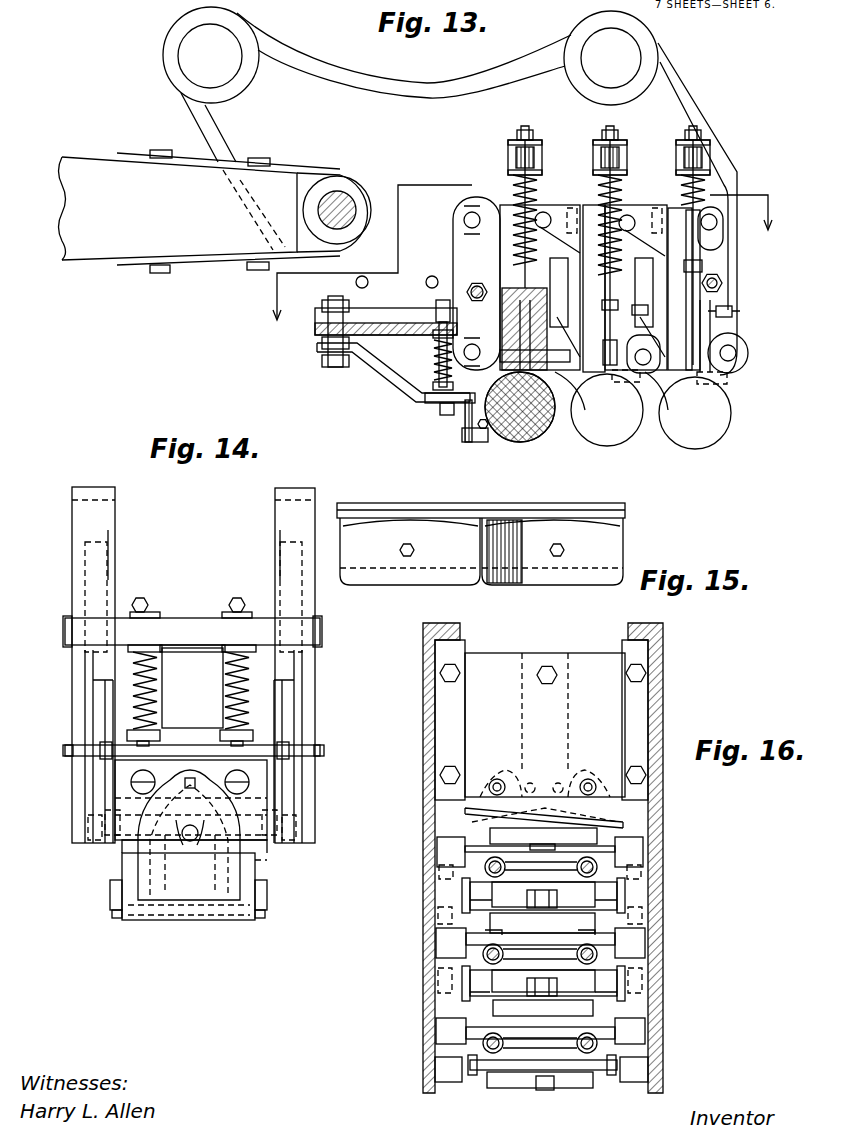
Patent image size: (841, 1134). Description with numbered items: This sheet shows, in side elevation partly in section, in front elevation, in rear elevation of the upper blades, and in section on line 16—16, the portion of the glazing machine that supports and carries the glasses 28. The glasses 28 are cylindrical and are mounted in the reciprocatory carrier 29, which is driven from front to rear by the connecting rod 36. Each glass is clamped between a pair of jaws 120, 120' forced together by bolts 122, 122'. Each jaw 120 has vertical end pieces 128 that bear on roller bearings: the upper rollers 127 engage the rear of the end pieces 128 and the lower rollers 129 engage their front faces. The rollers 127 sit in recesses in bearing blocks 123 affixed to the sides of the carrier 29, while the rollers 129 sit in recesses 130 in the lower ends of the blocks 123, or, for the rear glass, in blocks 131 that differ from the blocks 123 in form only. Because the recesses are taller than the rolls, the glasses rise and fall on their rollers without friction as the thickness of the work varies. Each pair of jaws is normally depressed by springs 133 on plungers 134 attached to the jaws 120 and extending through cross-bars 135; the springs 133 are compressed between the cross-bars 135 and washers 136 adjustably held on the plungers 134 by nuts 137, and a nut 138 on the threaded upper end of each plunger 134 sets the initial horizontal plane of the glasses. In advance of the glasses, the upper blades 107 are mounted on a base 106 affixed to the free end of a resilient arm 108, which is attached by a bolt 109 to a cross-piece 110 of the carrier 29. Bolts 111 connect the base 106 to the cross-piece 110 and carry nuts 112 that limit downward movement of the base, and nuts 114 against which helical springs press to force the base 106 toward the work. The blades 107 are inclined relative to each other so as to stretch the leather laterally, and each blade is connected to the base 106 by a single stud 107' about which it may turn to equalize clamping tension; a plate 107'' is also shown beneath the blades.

In FIG. 13, the section line 16 is at (513, 262).
In FIG. 13, the glasses 28 is at (521, 432).
In FIG. 14, the glasses 28 is at (160, 922).
In FIG. 16, the glasses 28 is at (632, 872).
In FIG. 13, the carrier 29 is at (450, 191).
In FIG. 14, the carrier 29 is at (300, 715).
In FIG. 16, the carrier 29 is at (640, 1027).
In FIG. 13, the connecting rod 36 is at (215, 211).
In FIG. 13, the base 106 is at (485, 430).
In FIG. 14, the base 106 is at (262, 897).
In FIG. 15, the base 106 is at (627, 511).
In FIG. 16, the base 106 is at (606, 805).
In FIG. 13, the blades 107 is at (460, 440).
In FIG. 14, the blades 107 is at (206, 928).
In FIG. 15, the blades 107 is at (481, 564).
In FIG. 13, the stud 107' is at (449, 421).
In FIG. 15, the stud 107' is at (487, 547).
In FIG. 16, the plate 107'' is at (543, 844).
In FIG. 13, the resilient arm 108 is at (388, 372).
In FIG. 16, the resilient arm 108 is at (565, 707).
In FIG. 13, the bolt 109 is at (336, 368).
In FIG. 16, the bolt 109 is at (548, 668).
In FIG. 13, the cross-piece 110 is at (380, 318).
In FIG. 14, the cross-piece 110 is at (305, 790).
In FIG. 16, the cross-piece 110 is at (496, 662).
In FIG. 13, the bolts 111 is at (437, 353).
In FIG. 16, the bolts 111 is at (497, 778).
In FIG. 13, the nuts 112 is at (428, 286).
In FIG. 16, the nuts 112 is at (516, 782).
In FIG. 13, the nuts 114 is at (428, 400).
In FIG. 13, the jaw 120 is at (599, 335).
In FIG. 14, the jaw 120 is at (219, 864).
In FIG. 16, the jaw 120 is at (542, 923).
In FIG. 13, the jaw 120' is at (605, 418).
In FIG. 14, the jaw 120' is at (236, 902).
In FIG. 16, the jaw 120' is at (500, 1006).
In FIG. 13, the bolt 122 is at (686, 382).
In FIG. 14, the bolt 122 is at (189, 835).
In FIG. 16, the bolt 122 is at (543, 1039).
In FIG. 13, the bolt 122' is at (721, 305).
In FIG. 14, the bolt 122' is at (131, 854).
In FIG. 16, the bolt 122' is at (542, 1084).
In FIG. 13, the bearing blocks 123 is at (540, 197).
In FIG. 16, the bearing blocks 123 is at (640, 898).
In FIG. 13, the rollers 127 is at (558, 218).
In FIG. 16, the rollers 127 is at (640, 928).
In FIG. 13, the end pieces 128 is at (503, 240).
In FIG. 14, the end pieces 128 is at (105, 784).
In FIG. 16, the end pieces 128 is at (445, 950).
In FIG. 13, the rollers 129 is at (630, 374).
In FIG. 14, the rollers 129 is at (96, 842).
In FIG. 16, the rollers 129 is at (648, 965).
In FIG. 13, the recesses 130 is at (465, 232).
In FIG. 13, the blocks 131 is at (738, 304).
In FIG. 14, the blocks 131 is at (95, 727).
In FIG. 16, the blocks 131 is at (445, 806).
In FIG. 13, the springs 133 is at (543, 180).
In FIG. 14, the springs 133 is at (226, 670).
In FIG. 16, the springs 133 is at (440, 850).
In FIG. 13, the plungers 134 is at (693, 128).
In FIG. 14, the plungers 134 is at (236, 600).
In FIG. 16, the plungers 134 is at (650, 847).
In FIG. 13, the cross-bars 135 is at (474, 284).
In FIG. 14, the cross-bars 135 is at (192, 631).
In FIG. 13, the washers 136 is at (628, 162).
In FIG. 14, the washers 136 is at (165, 702).
In FIG. 14, the nuts 137 is at (230, 733).
In FIG. 13, the nut 138 is at (618, 145).
In FIG. 14, the nut 138 is at (224, 613).